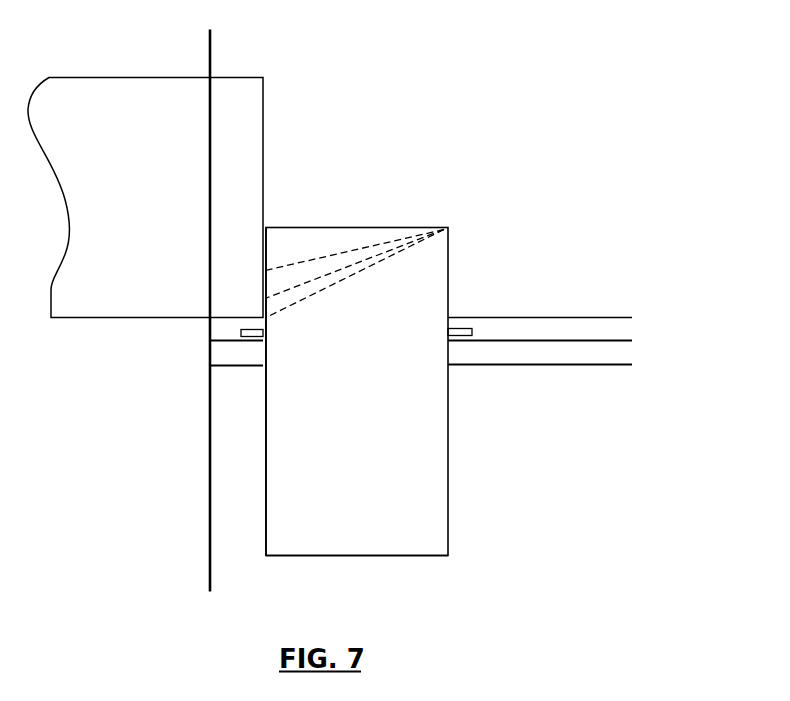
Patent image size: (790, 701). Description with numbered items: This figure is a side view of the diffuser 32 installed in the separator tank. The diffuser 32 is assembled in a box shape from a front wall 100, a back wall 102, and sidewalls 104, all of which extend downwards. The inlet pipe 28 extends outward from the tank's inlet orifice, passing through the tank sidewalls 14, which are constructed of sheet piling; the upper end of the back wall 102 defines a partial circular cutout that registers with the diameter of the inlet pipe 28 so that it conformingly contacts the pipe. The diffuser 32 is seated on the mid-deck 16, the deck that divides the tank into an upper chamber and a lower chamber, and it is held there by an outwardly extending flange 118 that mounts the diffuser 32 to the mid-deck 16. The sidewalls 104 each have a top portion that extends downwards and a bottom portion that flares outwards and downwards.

The sidewalls 14 is at (208, 48).
The inlet pipe 28 is at (237, 98).
The diffuser 32 is at (433, 159).
The front wall 100 is at (448, 263).
The mid-deck 16 is at (599, 298).
The outwardly extending flange 118 is at (250, 338).
The back wall 102 is at (266, 462).
The sidewalls 104 is at (397, 508).